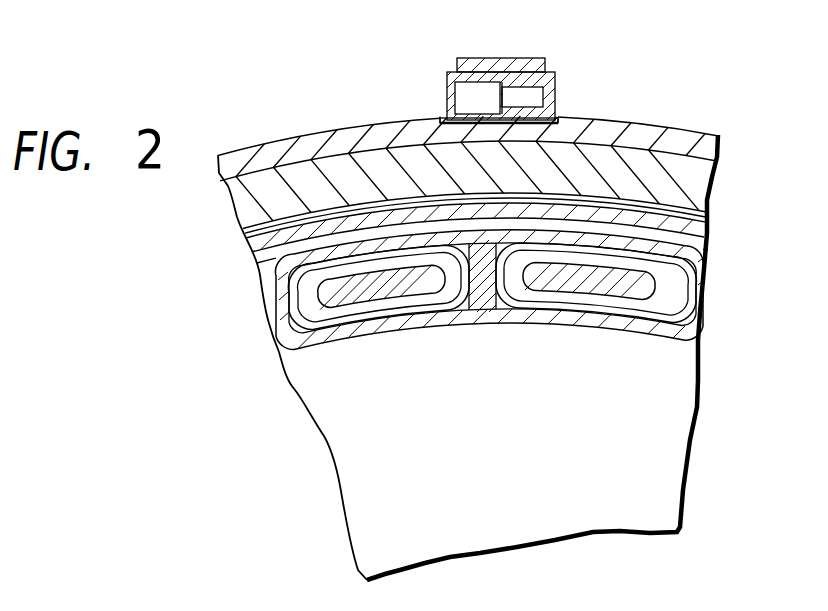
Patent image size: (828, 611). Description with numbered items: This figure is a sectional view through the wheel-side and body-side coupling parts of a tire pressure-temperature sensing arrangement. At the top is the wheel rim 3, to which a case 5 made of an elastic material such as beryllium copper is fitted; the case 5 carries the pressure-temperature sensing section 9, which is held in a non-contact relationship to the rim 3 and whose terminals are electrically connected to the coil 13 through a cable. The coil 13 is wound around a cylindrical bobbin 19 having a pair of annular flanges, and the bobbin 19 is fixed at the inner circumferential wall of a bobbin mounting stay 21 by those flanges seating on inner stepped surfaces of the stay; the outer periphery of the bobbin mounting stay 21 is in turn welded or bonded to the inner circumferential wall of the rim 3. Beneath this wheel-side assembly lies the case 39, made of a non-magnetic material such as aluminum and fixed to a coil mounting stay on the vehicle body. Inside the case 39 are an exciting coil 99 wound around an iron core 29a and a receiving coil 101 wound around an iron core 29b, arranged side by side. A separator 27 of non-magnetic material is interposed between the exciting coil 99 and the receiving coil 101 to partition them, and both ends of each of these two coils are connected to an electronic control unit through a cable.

The wheel rim 3 is at (408, 124).
The case 5 is at (474, 58).
The pressure-temperature sensing section 9 is at (556, 97).
The coil 13 is at (244, 236).
The cylindrical bobbin 19 is at (258, 257).
The bobbin mounting stay 21 is at (309, 176).
The separator 27 is at (483, 300).
The iron core 29a is at (387, 284).
The iron core 29b is at (656, 288).
The case 39 is at (296, 337).
The exciting coil 99 is at (305, 297).
The receiving coil 101 is at (662, 308).